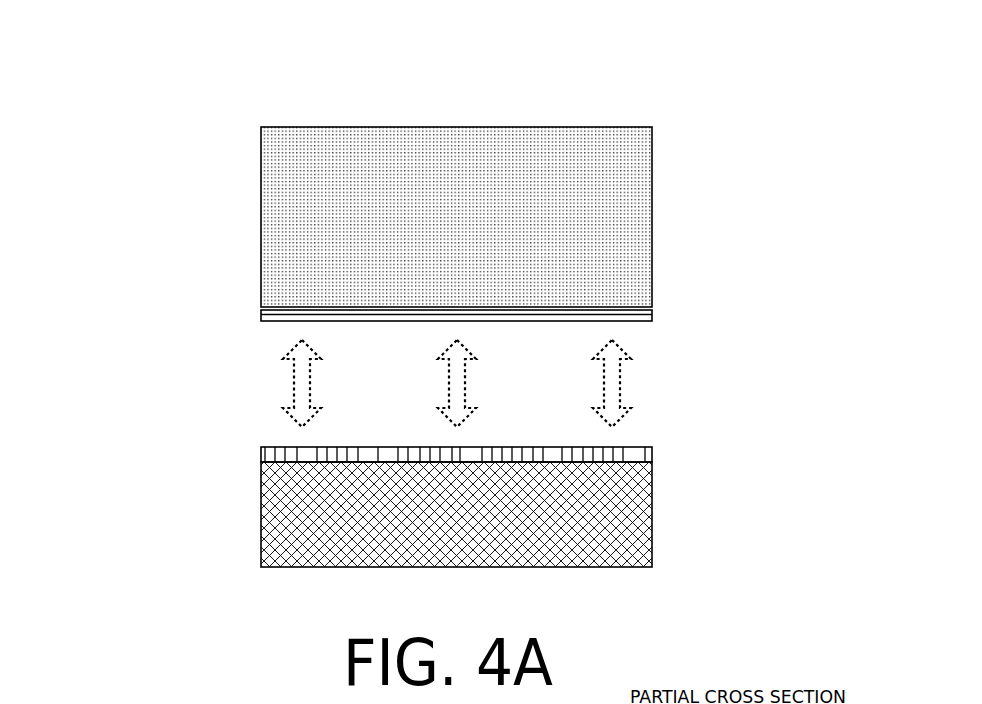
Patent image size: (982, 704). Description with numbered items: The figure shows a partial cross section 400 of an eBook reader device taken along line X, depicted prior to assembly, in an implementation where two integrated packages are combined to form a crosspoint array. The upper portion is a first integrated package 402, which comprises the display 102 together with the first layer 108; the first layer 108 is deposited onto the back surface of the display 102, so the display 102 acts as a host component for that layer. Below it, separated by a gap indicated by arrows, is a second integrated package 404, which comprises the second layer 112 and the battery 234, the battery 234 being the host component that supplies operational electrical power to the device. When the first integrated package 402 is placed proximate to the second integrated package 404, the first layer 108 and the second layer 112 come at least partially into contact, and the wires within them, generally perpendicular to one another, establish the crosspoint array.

The cross section 400 is at (567, 100).
The first integrated package 402 is at (247, 323).
The display 102 is at (340, 210).
The first layer 108 is at (300, 314).
The second integrated package 404 is at (247, 567).
The second layer 112 is at (290, 452).
The battery 234 is at (600, 500).